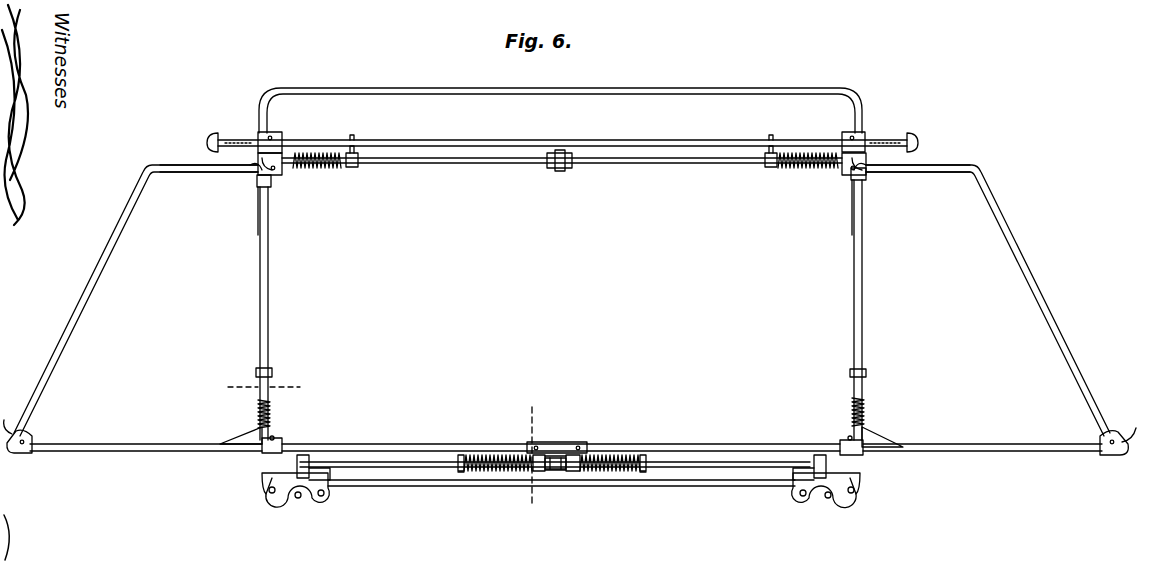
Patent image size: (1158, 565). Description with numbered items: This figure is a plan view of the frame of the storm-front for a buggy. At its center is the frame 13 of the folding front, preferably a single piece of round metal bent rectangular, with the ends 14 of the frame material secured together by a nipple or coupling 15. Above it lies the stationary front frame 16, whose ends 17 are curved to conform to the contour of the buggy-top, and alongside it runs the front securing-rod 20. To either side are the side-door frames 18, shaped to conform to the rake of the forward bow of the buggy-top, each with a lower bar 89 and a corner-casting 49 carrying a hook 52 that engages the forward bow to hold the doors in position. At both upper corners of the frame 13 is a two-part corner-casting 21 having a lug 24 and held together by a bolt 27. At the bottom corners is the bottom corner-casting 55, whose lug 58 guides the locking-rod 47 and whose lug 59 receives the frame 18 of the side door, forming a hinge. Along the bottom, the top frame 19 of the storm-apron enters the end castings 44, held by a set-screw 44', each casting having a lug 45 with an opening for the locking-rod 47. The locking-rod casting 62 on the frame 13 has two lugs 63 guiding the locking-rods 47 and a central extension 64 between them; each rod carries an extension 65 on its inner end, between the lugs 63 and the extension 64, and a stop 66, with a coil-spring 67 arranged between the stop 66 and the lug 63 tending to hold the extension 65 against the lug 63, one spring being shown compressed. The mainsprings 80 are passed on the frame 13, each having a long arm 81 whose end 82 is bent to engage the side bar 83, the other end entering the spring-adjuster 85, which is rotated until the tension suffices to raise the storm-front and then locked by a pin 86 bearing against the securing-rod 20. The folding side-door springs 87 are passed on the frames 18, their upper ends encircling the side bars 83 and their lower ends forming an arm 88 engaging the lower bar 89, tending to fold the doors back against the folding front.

The frame 13 is at (268, 308).
The ends of the frame material 14 is at (573, 166).
The nipple or coupling 15 is at (570, 152).
The stationary front frame 16 is at (428, 88).
The ends of the stationary front frame 17 is at (270, 108).
The side-door frames 18 is at (100, 278).
The top frame of the storm-apron 19 is at (438, 488).
The front securing-rod 20 is at (478, 140).
The corner-casting 21 is at (246, 170).
The lug 24 is at (264, 180).
The bolt 27 is at (282, 162).
The end castings 44 is at (561, 502).
The set-screw 44' is at (565, 446).
The lug 45 is at (278, 489).
The locking-rod 47 is at (432, 460).
The corner-casting for the folding side doors 49 is at (26, 452).
The hook 52 is at (18, 425).
The bottom corner-casting 55 is at (264, 449).
The lug 58 is at (310, 455).
The lug 59 is at (273, 436).
The locking-rod casting 62 is at (552, 471).
The lugs 63 is at (533, 470).
The central extension 64 is at (558, 457).
The extension 65 is at (548, 456).
The stop 66 is at (462, 474).
The coil-spring 67 is at (480, 455).
The mainsprings 80 is at (318, 155).
The long arm 81 is at (280, 165).
The end of the long arm 82 is at (262, 185).
The side bar 83 is at (270, 228).
The spring-adjuster 85 is at (360, 165).
The pin 86 is at (358, 143).
The folding side-door springs 87 is at (258, 405).
The arm 88 is at (240, 435).
The lower bar 89 is at (118, 452).